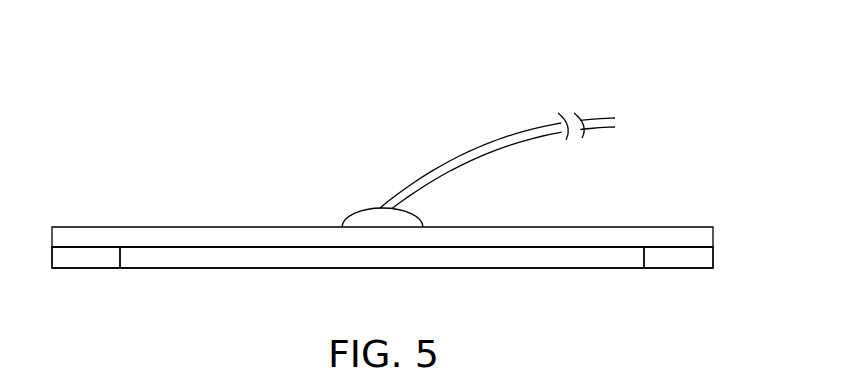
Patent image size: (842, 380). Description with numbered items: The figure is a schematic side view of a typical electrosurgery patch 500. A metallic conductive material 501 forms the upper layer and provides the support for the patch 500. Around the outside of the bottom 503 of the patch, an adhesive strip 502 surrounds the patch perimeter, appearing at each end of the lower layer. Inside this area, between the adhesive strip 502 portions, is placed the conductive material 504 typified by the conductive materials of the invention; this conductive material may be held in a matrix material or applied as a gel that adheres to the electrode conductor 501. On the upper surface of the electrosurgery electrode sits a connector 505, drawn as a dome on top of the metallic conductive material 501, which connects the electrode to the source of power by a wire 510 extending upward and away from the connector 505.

The electrosurgery patch 500 is at (630, 86).
The metallic conductive material 501 is at (660, 225).
The adhesive strip 502 is at (90, 271).
The bottom 503 is at (492, 270).
The conductive material 504 is at (237, 258).
The connector 505 is at (363, 210).
The wire 510 is at (505, 140).